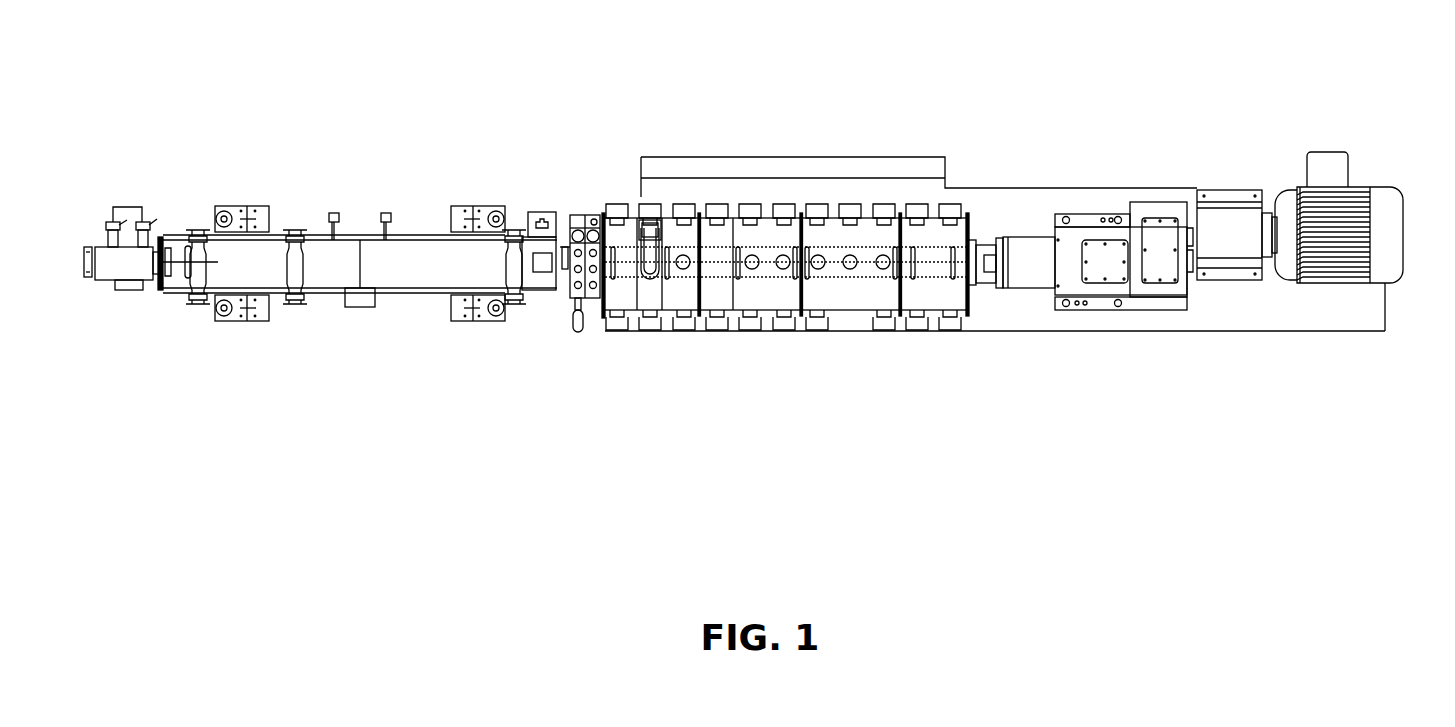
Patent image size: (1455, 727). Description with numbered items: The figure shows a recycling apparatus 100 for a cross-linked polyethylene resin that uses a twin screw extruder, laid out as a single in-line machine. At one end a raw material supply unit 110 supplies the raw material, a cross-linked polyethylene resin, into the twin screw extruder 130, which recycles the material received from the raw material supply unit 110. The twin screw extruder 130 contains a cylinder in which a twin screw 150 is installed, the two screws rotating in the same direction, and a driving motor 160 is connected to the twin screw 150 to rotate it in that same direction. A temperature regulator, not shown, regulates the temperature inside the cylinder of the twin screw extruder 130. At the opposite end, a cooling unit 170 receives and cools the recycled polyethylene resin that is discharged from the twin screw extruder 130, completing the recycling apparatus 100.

The recycling apparatus 100 is at (197, 75).
The raw material supply unit 110 is at (1044, 236).
The twin screw extruder 130 is at (731, 328).
The twin screw 150 is at (836, 249).
The driving motor 160 is at (1393, 209).
The cooling unit 170 is at (371, 198).